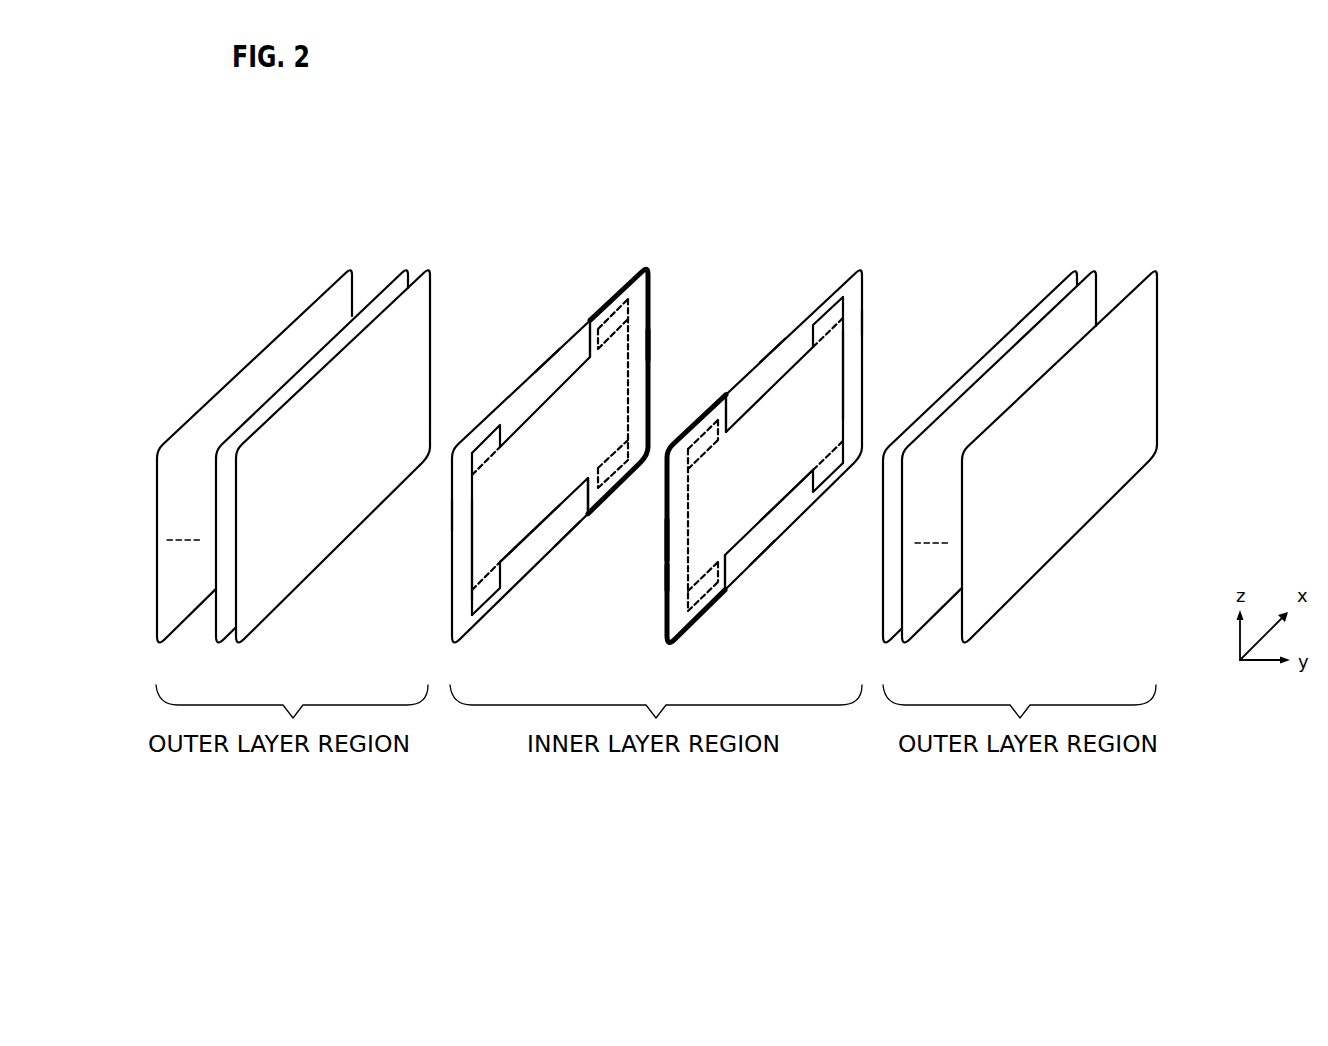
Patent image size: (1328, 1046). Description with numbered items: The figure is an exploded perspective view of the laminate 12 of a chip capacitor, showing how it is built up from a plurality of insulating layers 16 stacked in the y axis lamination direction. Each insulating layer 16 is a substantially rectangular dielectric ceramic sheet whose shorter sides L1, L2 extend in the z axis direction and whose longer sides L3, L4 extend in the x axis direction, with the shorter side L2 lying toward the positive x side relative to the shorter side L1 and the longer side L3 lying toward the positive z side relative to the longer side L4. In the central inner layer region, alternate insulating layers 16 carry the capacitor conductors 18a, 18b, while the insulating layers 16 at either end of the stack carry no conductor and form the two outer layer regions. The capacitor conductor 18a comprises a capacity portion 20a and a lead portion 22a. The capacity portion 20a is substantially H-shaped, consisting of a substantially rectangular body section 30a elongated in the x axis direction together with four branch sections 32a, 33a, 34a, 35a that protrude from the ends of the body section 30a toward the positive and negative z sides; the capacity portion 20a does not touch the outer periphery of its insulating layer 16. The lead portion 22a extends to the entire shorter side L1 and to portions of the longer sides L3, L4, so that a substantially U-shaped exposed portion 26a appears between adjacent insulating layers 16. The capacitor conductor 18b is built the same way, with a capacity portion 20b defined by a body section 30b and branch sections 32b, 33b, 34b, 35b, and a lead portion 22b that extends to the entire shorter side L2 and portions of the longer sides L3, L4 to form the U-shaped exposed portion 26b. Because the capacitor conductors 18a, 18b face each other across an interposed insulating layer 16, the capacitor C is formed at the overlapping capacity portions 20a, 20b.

The laminate 12 is at (330, 143).
The insulating layer 16 is at (350, 266).
The capacitor conductor 18a is at (796, 469).
The capacitor conductor 18b is at (543, 454).
The capacity portion 20a is at (793, 509).
The capacity portion 20b is at (529, 558).
The lead portion 22a is at (667, 547).
The lead portion 22b is at (596, 486).
The exposed portion 26a is at (667, 607).
The exposed portion 26b is at (652, 308).
The body section 30a is at (832, 367).
The body section 30b is at (480, 550).
The branch section 32a is at (864, 286).
The branch section 32b is at (612, 315).
The branch section 33a is at (844, 442).
The branch section 33b is at (614, 460).
The branch section 34a is at (700, 450).
The branch section 34b is at (486, 452).
The branch section 35a is at (705, 598).
The branch section 35b is at (485, 590).
The capacitor C is at (735, 277).
The shorter side L1 is at (452, 540).
The shorter side L2 is at (653, 343).
The longer side L3 is at (546, 364).
The longer side L4 is at (565, 537).